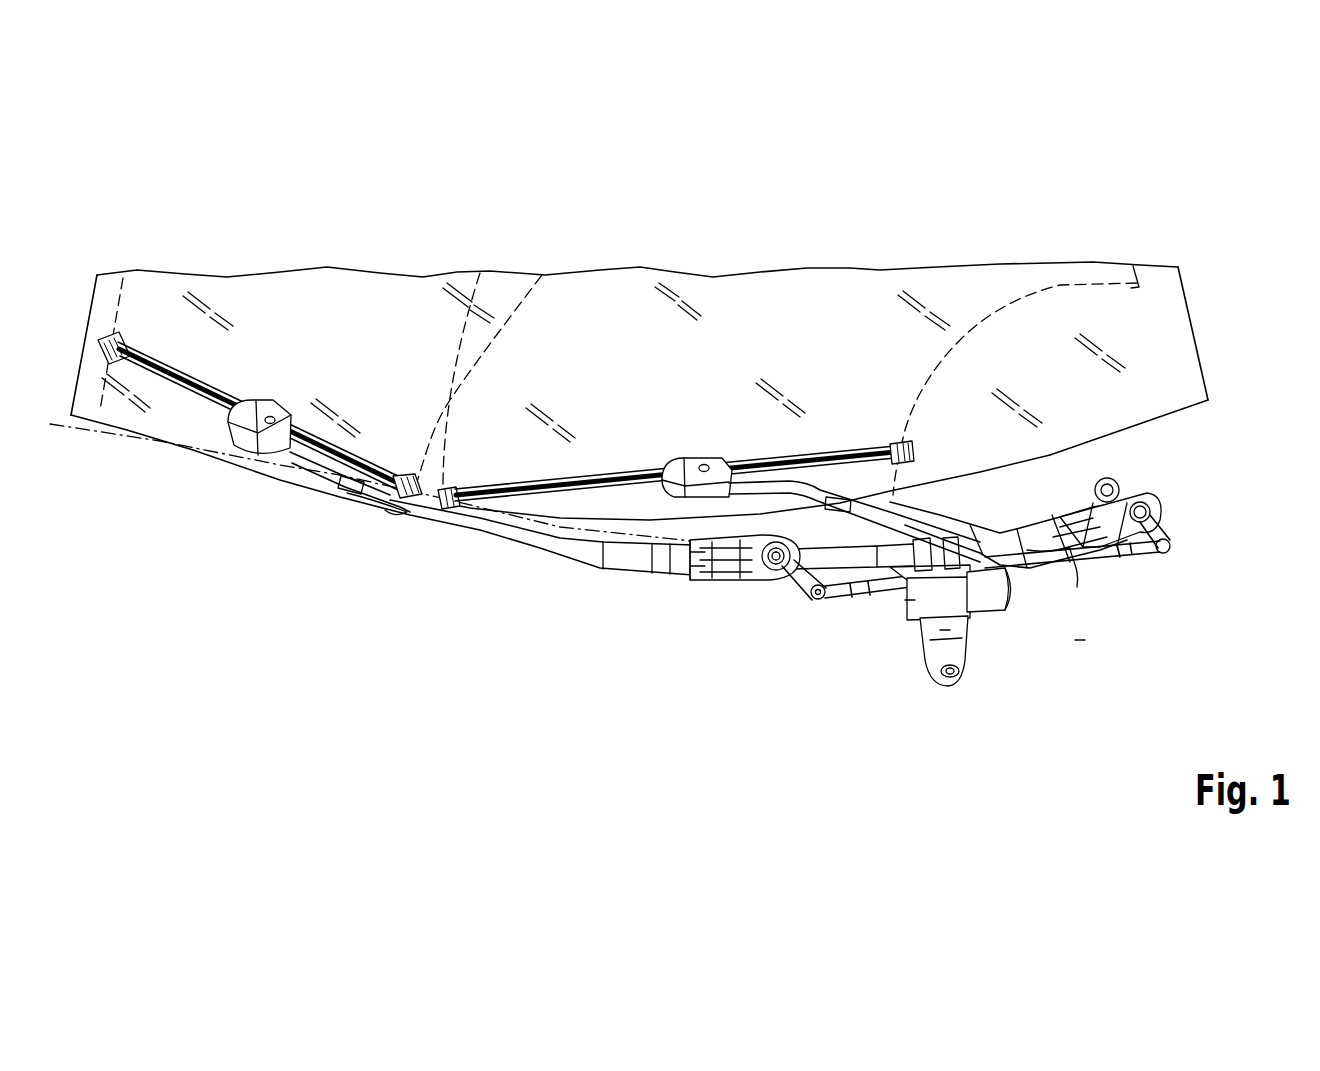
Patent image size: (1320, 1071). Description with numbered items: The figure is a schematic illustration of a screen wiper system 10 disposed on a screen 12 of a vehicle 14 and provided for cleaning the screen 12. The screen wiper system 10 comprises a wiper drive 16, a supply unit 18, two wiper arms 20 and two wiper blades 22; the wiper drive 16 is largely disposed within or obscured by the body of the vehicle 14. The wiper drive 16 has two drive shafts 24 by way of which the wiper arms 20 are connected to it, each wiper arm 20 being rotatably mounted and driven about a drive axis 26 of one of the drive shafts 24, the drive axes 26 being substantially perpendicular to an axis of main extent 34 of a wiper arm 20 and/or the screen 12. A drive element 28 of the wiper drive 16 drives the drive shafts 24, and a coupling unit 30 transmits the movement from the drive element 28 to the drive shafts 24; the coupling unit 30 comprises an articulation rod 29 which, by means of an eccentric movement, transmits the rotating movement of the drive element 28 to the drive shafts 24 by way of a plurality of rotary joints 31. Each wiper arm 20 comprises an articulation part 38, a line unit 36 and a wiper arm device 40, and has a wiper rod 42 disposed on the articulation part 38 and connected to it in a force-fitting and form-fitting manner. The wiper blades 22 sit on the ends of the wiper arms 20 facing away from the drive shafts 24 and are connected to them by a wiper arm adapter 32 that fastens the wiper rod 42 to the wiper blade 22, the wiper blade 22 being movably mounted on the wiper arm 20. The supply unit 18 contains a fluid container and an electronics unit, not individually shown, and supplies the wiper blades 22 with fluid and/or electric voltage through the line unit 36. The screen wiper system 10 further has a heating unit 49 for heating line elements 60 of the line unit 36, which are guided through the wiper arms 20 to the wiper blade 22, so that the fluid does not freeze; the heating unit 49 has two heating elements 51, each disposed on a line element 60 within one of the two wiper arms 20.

The screen wiper system 10 is at (1083, 720).
The screen 12 is at (1040, 320).
The vehicle 14 is at (318, 212).
The wiper drive 16 is at (870, 712).
The supply unit 18 is at (958, 714).
The wiper arm 20 is at (425, 555).
The wiper blade 22 is at (165, 377).
The drive shaft 24 is at (772, 575).
The drive axis 26 is at (784, 572).
The drive element 28 is at (975, 590).
The articulation rod 29 is at (870, 592).
The coupling unit 30 is at (898, 608).
The rotary joint 31 is at (815, 602).
The wiper arm adapter 32 is at (260, 428).
The axis of main extent 34 is at (203, 453).
The line unit 36 is at (712, 598).
The articulation part 38 is at (622, 562).
The wiper arm device 40 is at (728, 600).
The wiper rod 42 is at (497, 540).
The heating unit 49 is at (928, 685).
The heating element 51 is at (350, 493).
The line element 60 is at (712, 575).